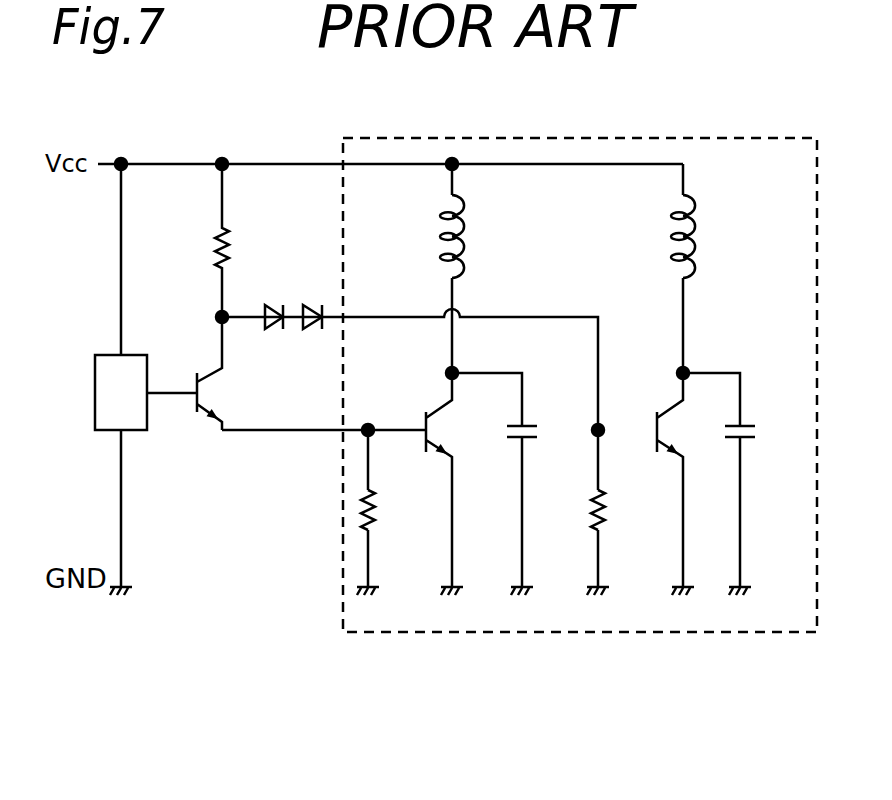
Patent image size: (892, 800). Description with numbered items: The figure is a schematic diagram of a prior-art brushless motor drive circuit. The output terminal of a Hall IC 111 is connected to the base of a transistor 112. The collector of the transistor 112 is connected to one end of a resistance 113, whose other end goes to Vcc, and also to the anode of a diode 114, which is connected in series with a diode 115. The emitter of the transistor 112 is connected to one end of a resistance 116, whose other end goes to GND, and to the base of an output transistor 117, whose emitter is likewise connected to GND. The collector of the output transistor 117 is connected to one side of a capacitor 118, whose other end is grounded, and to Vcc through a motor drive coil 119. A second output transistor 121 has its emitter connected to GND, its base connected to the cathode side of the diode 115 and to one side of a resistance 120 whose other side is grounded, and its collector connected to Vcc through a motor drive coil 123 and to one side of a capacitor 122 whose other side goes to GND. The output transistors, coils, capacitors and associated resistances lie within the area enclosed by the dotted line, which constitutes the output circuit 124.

The Hall IC 111 is at (140, 355).
The transistor 112 is at (208, 400).
The resistance 113 is at (218, 244).
The diode 114 is at (265, 311).
The diode 115 is at (304, 331).
The resistance 116 is at (375, 515).
The output transistor 117 is at (437, 414).
The capacitor 118 is at (530, 423).
The motor drive coil 119 is at (463, 256).
The resistance 120 is at (605, 515).
The output transistor 121 is at (667, 410).
The capacitor 122 is at (748, 423).
The motor drive coil 123 is at (695, 258).
The output circuit 124 is at (638, 137).